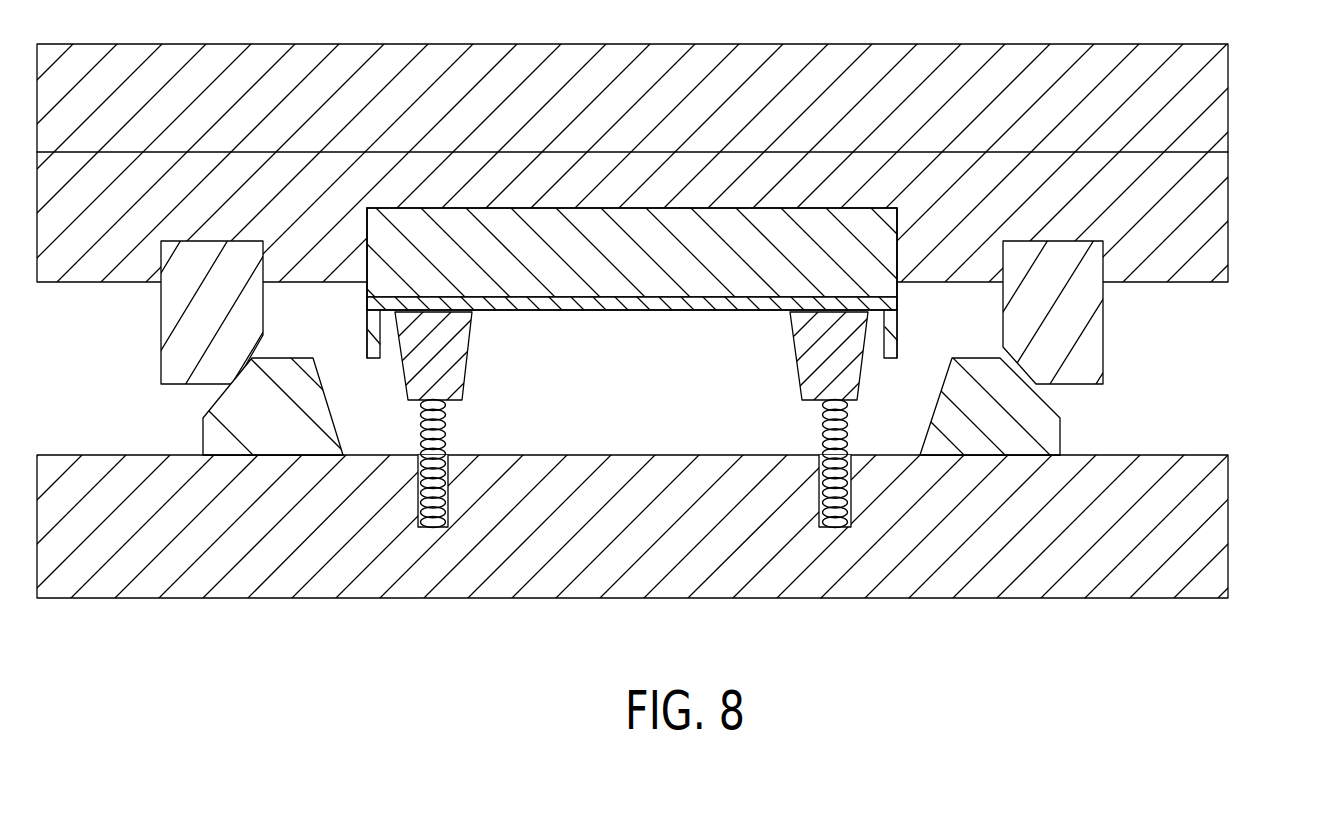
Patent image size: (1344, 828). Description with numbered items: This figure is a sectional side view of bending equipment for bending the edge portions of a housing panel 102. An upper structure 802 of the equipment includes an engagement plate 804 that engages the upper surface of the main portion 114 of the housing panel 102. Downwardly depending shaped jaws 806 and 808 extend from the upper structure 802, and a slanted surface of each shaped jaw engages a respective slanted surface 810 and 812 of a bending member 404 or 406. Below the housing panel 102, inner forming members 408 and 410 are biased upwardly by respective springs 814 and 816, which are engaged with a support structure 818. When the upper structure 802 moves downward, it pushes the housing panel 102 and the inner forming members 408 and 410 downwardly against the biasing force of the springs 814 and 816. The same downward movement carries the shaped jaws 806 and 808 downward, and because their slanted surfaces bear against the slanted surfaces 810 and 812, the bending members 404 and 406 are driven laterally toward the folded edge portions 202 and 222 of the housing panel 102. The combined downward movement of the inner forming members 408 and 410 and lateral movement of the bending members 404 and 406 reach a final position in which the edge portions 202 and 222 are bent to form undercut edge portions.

The upper structure 802 is at (1248, 44).
The engagement plate 804 is at (694, 287).
The housing panel 102 is at (903, 310).
The main portion 114 is at (612, 307).
The folded edge portion 202 is at (366, 332).
The folded edge portion 222 is at (897, 335).
The shaped jaw 806 is at (178, 358).
The shaped jaw 808 is at (1082, 356).
The inner forming member 408 is at (445, 373).
The inner forming member 410 is at (813, 368).
The spring 814 is at (447, 438).
The spring 816 is at (823, 440).
The slanted surface 810 is at (210, 405).
The slanted surface 812 is at (1055, 400).
The bending member 404 is at (262, 442).
The bending member 406 is at (1000, 438).
The support structure 818 is at (1215, 537).